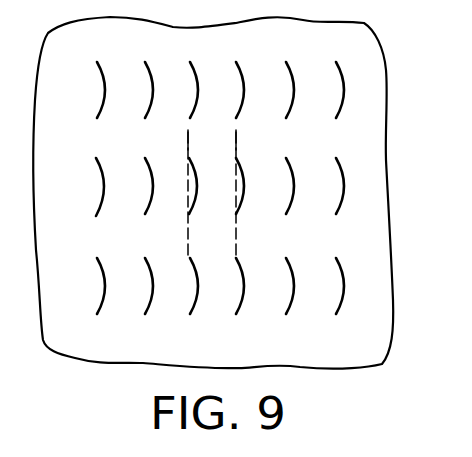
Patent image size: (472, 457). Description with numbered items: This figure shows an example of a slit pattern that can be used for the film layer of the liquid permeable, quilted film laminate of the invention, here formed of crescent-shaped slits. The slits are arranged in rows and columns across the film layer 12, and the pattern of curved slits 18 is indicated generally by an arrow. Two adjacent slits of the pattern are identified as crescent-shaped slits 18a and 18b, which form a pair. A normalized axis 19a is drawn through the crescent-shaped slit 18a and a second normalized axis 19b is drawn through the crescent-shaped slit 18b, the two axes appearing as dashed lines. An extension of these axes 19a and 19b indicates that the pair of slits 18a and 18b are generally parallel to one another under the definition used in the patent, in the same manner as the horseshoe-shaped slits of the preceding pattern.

The sheet 12 is at (328, 352).
The curved marks 18 is at (95, 183).
The crescent-shaped slit 18a is at (193, 181).
The crescent-shaped slit 18b is at (246, 185).
The normalized axis 19a is at (187, 142).
The normalized axis 19b is at (237, 142).